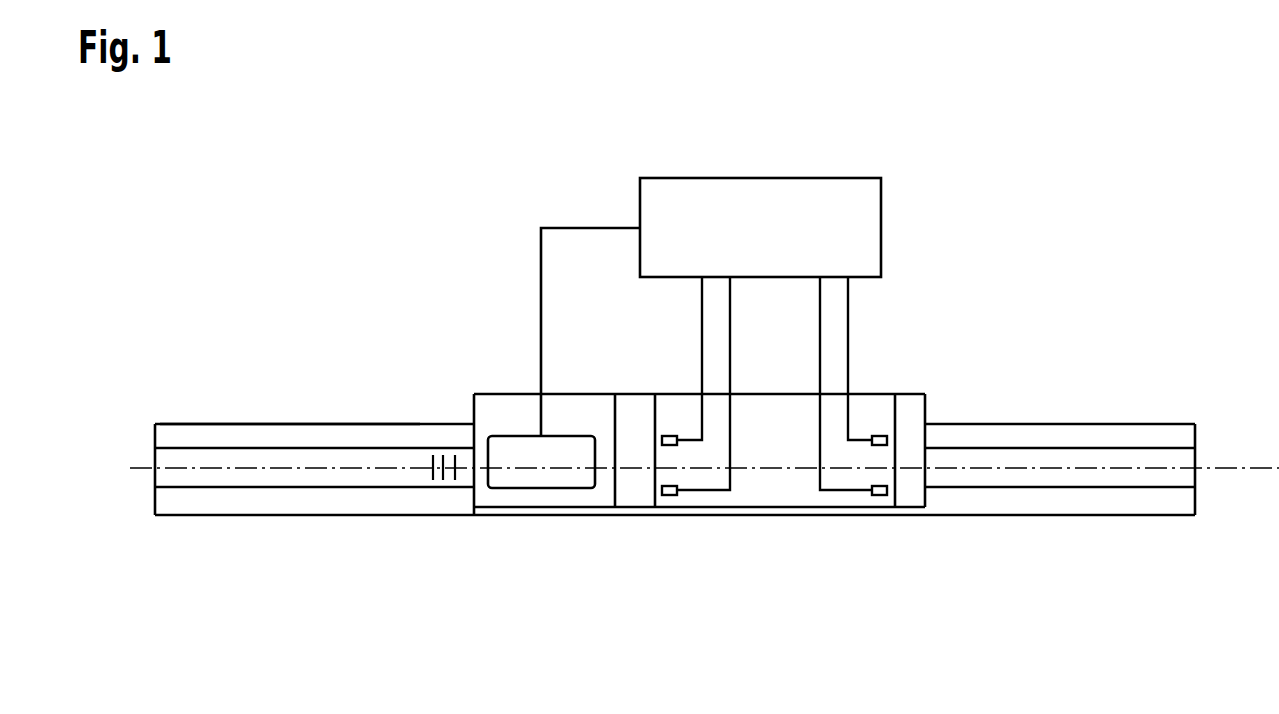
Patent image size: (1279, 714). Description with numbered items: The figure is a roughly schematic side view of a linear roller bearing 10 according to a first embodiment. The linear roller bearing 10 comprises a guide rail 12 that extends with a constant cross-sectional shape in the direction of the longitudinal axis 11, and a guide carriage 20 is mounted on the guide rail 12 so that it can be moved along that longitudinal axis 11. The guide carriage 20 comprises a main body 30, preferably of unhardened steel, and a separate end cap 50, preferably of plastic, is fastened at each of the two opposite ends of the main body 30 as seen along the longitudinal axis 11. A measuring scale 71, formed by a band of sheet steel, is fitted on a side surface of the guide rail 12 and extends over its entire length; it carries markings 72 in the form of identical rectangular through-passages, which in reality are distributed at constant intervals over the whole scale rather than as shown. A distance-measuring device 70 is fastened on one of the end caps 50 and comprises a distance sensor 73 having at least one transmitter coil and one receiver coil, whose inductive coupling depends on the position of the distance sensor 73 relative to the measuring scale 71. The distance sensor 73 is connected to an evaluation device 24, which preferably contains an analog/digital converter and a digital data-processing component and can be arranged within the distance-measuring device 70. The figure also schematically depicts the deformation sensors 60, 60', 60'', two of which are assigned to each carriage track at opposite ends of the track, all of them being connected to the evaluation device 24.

The linear roller bearing 10 is at (1153, 182).
The longitudinal axis 11 is at (1243, 470).
The guide rail 12 is at (1083, 498).
The guide carriage 20 is at (775, 485).
The main body 30 is at (788, 570).
The evaluation device 24 is at (862, 232).
The end cap 50 is at (637, 483).
The deformation sensor 60 is at (788, 445).
The deformation sensor 60' is at (694, 423).
The deformation sensor 60'' is at (853, 423).
The distance-measuring device 70 is at (510, 405).
The measuring scale 71 is at (288, 455).
The markings 72 is at (430, 462).
The distance sensor 73 is at (520, 478).